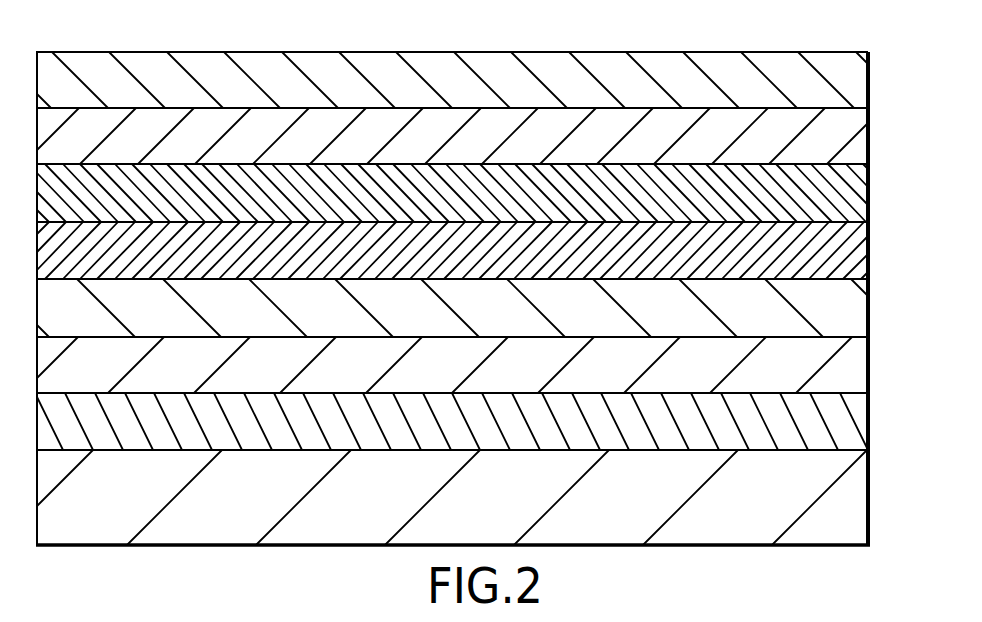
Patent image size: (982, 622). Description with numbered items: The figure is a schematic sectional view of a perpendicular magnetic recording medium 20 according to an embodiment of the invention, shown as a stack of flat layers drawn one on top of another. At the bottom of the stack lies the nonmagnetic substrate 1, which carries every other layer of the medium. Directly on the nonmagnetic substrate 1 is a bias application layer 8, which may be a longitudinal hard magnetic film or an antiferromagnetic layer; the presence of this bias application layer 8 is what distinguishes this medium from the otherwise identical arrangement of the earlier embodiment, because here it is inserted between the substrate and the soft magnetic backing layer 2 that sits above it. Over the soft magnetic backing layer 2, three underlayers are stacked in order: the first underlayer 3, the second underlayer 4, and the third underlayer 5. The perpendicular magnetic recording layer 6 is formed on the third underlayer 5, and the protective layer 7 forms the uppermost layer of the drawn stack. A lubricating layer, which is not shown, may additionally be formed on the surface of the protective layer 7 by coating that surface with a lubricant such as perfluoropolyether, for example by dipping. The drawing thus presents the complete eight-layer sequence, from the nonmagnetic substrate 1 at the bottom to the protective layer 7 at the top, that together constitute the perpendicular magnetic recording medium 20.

The perpendicular magnetic recording medium 20 is at (470, 272).
The protective layer 7 is at (857, 83).
The perpendicular magnetic recording layer 6 is at (857, 140).
The third underlayer 5 is at (857, 198).
The second underlayer 4 is at (857, 255).
The first underlayer 3 is at (857, 312).
The soft magnetic backing layer 2 is at (857, 369).
The bias application layer 8 is at (857, 425).
The nonmagnetic substrate 1 is at (857, 489).